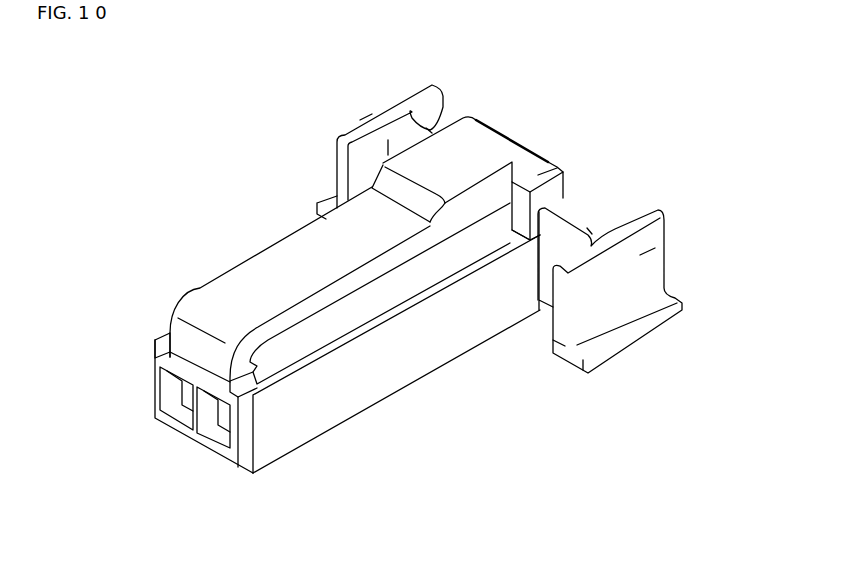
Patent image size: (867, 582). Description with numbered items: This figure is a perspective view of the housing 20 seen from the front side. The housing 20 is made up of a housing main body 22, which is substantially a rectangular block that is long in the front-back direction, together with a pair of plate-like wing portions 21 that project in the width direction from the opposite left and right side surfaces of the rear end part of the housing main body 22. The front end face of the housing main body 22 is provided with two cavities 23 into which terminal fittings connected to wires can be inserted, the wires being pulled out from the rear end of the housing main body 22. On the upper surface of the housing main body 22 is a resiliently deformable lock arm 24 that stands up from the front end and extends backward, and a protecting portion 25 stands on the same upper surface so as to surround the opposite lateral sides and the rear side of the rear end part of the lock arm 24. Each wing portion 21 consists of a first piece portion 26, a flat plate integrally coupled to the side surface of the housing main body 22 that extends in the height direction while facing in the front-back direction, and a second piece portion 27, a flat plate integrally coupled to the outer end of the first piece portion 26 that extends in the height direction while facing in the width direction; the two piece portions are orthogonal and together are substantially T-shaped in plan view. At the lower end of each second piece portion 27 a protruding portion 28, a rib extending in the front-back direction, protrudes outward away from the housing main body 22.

The housing 20 is at (229, 275).
The wing portion 21 is at (430, 83).
The housing main body 22 is at (357, 408).
The cavity 23 is at (220, 442).
The lock arm 24 is at (284, 247).
The protecting portion 25 is at (547, 168).
The first piece portion 26 is at (425, 130).
The second piece portion 27 is at (365, 122).
The protruding portion 28 is at (321, 200).